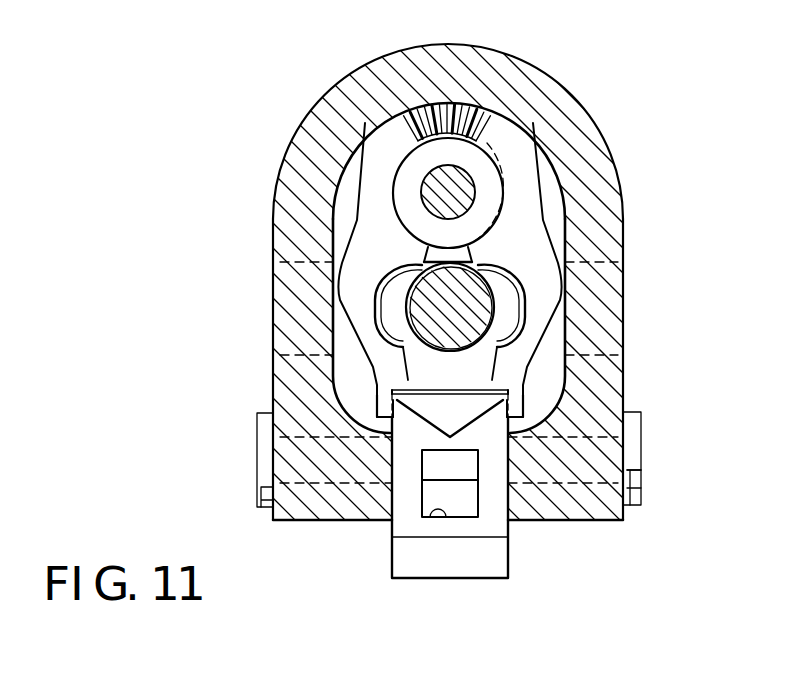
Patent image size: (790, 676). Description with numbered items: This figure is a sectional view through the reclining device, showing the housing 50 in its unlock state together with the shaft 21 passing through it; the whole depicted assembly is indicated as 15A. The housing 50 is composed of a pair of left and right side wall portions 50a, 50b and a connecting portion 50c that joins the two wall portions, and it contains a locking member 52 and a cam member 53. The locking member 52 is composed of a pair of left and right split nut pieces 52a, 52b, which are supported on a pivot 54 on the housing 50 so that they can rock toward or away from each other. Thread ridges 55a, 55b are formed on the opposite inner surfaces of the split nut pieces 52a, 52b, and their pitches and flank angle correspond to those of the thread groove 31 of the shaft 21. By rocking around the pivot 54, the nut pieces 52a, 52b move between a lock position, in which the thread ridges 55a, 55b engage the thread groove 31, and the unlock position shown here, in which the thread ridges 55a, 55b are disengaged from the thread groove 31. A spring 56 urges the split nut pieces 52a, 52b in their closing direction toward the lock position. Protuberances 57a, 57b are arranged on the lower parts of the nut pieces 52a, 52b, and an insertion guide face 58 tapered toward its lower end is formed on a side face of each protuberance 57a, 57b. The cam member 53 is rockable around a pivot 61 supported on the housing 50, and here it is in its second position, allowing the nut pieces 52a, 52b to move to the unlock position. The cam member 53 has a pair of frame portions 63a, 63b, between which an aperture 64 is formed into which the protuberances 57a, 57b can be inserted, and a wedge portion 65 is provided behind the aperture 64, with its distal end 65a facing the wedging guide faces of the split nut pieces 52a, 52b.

The arm assembly 15A is at (615, 85).
The shaft 21 is at (477, 313).
The thread groove 31 is at (497, 285).
The housing 50 is at (333, 80).
The side wall portion 50a is at (290, 420).
The side wall portion 50b is at (575, 410).
The connecting portion 50c is at (417, 73).
The locking member 52 is at (355, 198).
The split nut piece 52a is at (358, 242).
The split nut piece 52b is at (527, 230).
The cam member 53 is at (512, 585).
The pivot 54 is at (460, 187).
The thread ridge 55a is at (392, 297).
The thread ridge 55b is at (508, 318).
The spring 56 is at (483, 110).
The protuberance 57a is at (375, 395).
The protuberance 57b is at (520, 392).
The insertion guide face 58 is at (388, 393).
The pivot 61 is at (627, 470).
The frame portion 63a is at (402, 495).
The frame portion 63b is at (500, 495).
The aperture 64 is at (430, 513).
The wedge portion 65 is at (560, 440).
The distal end 65a is at (420, 445).